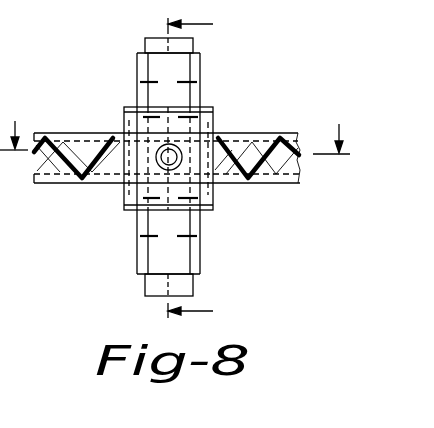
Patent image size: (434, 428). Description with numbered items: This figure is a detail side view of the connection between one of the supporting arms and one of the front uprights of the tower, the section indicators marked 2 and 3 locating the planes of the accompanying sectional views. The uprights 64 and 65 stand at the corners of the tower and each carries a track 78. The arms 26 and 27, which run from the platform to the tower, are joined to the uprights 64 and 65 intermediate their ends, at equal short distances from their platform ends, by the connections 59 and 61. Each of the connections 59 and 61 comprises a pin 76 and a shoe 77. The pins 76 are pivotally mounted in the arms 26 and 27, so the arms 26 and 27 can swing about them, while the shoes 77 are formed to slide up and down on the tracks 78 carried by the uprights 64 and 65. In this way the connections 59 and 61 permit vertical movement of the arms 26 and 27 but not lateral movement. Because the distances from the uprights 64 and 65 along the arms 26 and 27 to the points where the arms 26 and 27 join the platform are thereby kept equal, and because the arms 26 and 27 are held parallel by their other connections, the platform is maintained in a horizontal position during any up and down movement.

The section line 2- 2 is at (175, 123).
The section line 3- 3 is at (206, 162).
The arm 26 is at (73, 177).
The arm 27 is at (62, 183).
The connection 59 is at (256, 136).
The connection 61 is at (213, 134).
The upright 64 is at (216, 253).
The upright 65 is at (201, 256).
The pin 76 is at (180, 168).
The shoe 77 is at (128, 106).
The track 78 is at (201, 82).